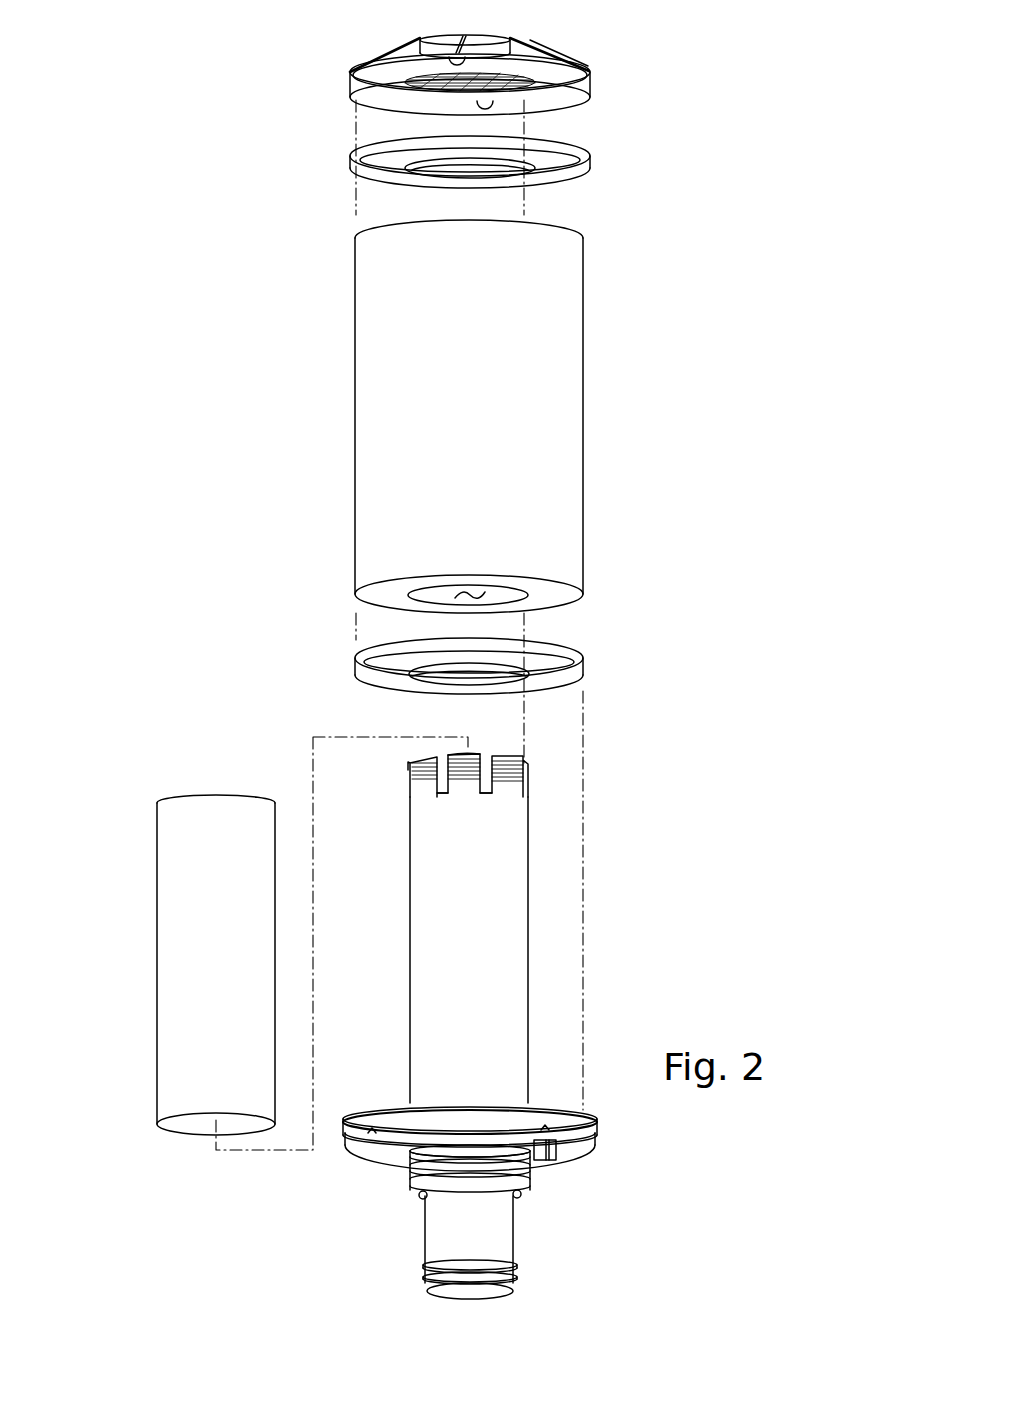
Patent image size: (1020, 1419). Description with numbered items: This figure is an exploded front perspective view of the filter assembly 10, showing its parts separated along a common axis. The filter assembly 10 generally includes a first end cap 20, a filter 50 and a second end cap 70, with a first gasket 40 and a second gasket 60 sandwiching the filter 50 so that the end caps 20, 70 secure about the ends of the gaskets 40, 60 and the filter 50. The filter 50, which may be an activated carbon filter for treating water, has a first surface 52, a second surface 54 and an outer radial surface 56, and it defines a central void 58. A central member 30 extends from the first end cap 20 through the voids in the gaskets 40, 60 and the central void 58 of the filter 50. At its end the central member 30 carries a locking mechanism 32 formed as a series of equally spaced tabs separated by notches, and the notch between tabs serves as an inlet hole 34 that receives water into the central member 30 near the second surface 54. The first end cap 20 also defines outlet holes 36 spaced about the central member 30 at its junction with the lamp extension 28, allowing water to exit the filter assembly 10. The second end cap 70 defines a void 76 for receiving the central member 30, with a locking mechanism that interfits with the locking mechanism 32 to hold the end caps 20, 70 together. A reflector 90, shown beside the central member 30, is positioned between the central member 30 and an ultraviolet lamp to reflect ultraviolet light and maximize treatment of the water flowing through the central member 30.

The filter assembly 10 is at (684, 136).
The first end cap 20 is at (580, 1196).
The lamp extension 28 is at (492, 1240).
The central member 30 is at (493, 903).
The locking mechanism 32 is at (532, 770).
The inlet hole 34 is at (484, 780).
The outlet hole 36 is at (428, 1198).
The first gasket 40 is at (586, 667).
The filter 50 is at (582, 424).
The first surface 52 is at (558, 596).
The second surface 54 is at (562, 229).
The outer radial surface 56 is at (584, 327).
The central void 58 is at (468, 598).
The second gasket 60 is at (356, 157).
The second end cap 70 is at (366, 40).
The void 76 is at (476, 80).
The reflector 90 is at (203, 863).